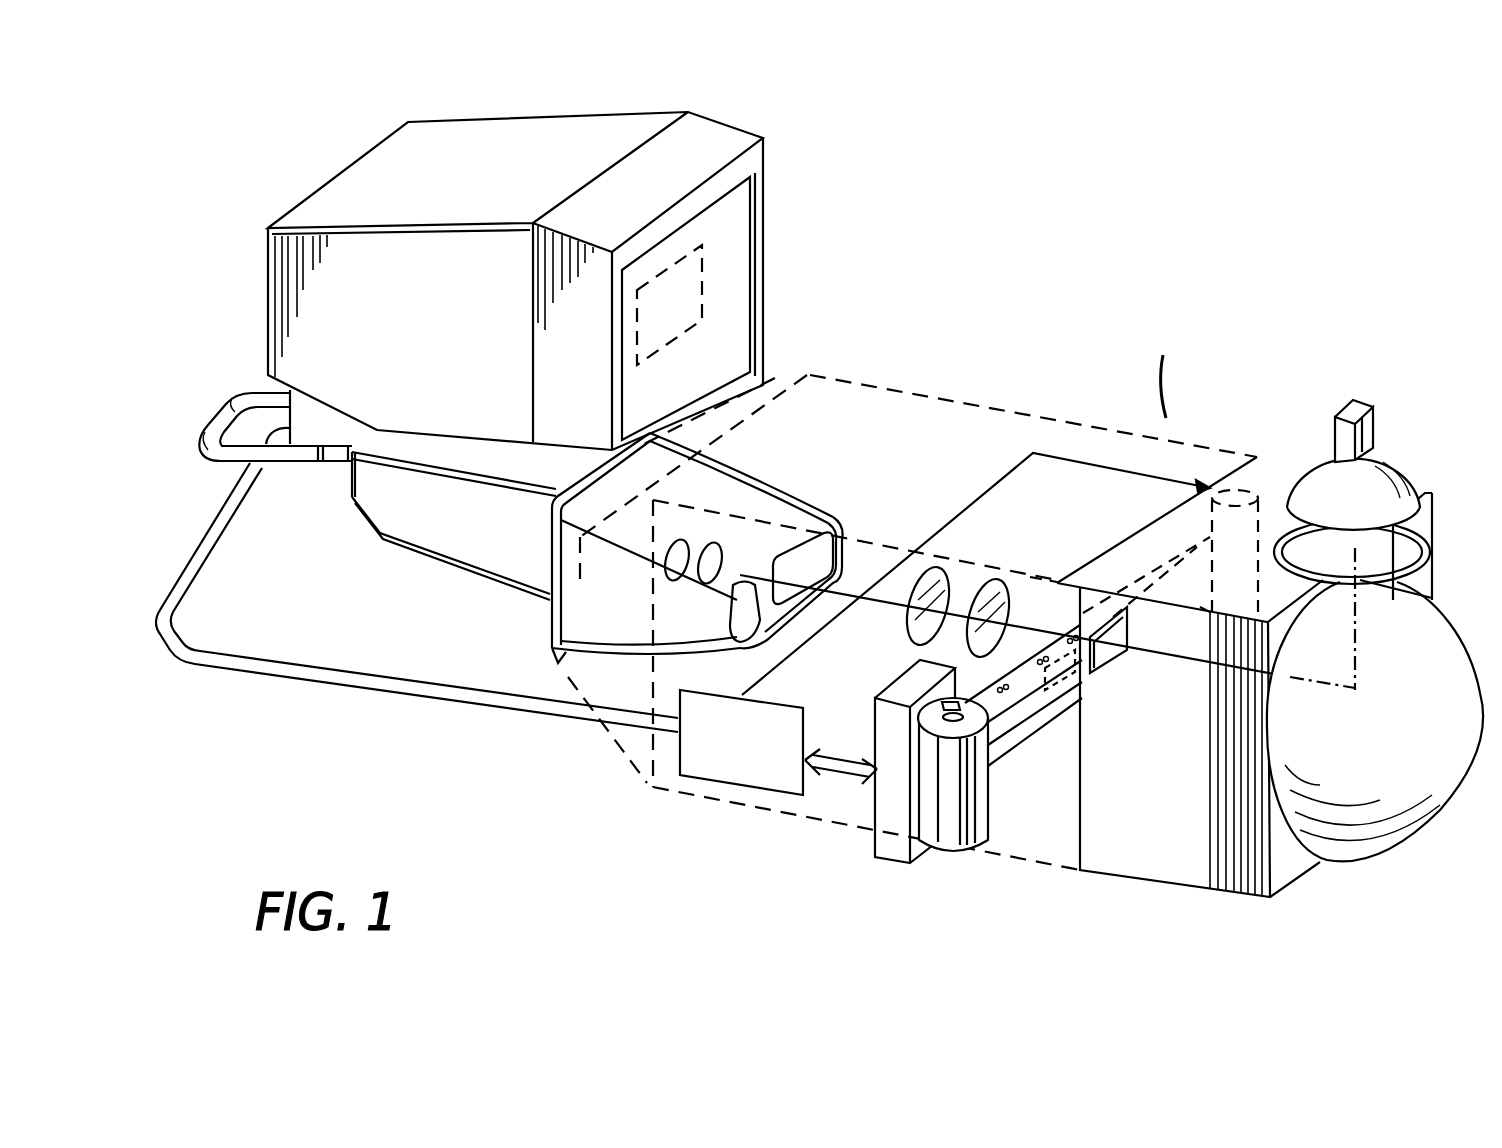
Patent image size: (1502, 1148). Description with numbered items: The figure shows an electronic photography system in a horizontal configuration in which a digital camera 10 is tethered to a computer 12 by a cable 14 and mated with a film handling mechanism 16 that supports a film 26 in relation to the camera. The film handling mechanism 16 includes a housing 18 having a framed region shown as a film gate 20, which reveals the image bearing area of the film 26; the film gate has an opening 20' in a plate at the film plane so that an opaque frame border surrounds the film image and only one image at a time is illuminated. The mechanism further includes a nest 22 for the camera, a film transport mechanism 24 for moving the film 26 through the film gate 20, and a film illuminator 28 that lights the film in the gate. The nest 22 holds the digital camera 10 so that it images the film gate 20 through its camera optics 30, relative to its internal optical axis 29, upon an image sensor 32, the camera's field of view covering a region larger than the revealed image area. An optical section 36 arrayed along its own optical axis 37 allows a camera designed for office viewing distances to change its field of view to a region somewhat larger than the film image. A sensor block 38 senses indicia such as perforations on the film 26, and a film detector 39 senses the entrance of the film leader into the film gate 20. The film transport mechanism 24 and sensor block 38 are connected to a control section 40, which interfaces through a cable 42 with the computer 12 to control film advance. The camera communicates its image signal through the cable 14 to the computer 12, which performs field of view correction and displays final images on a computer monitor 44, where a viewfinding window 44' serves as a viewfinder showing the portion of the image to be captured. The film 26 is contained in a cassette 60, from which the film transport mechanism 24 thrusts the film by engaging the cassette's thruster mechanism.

The digital camera 10 is at (430, 550).
The computer 12 is at (765, 205).
The cable 14 is at (278, 452).
The film handling mechanism 16 is at (1168, 369).
The housing 18 is at (913, 390).
The film gate 20 is at (1144, 651).
The opening 20' is at (1120, 562).
The nest 22 is at (563, 667).
The film transport mechanism 24 is at (1278, 470).
The film 26 is at (1025, 740).
The film illuminator 28 is at (1150, 845).
The internal optical axis 29 is at (783, 530).
The camera optics 30 is at (750, 537).
The image sensor 32 is at (555, 618).
The optical section 36 is at (903, 630).
The optical axis 37 is at (1030, 600).
The sensor block 38 is at (878, 712).
The film detector 39 is at (1063, 677).
The control section 40 is at (727, 775).
The cable 42 is at (340, 675).
The computer monitor 44 is at (736, 306).
The viewfinding window 44' is at (682, 320).
The cassette 60 is at (950, 845).